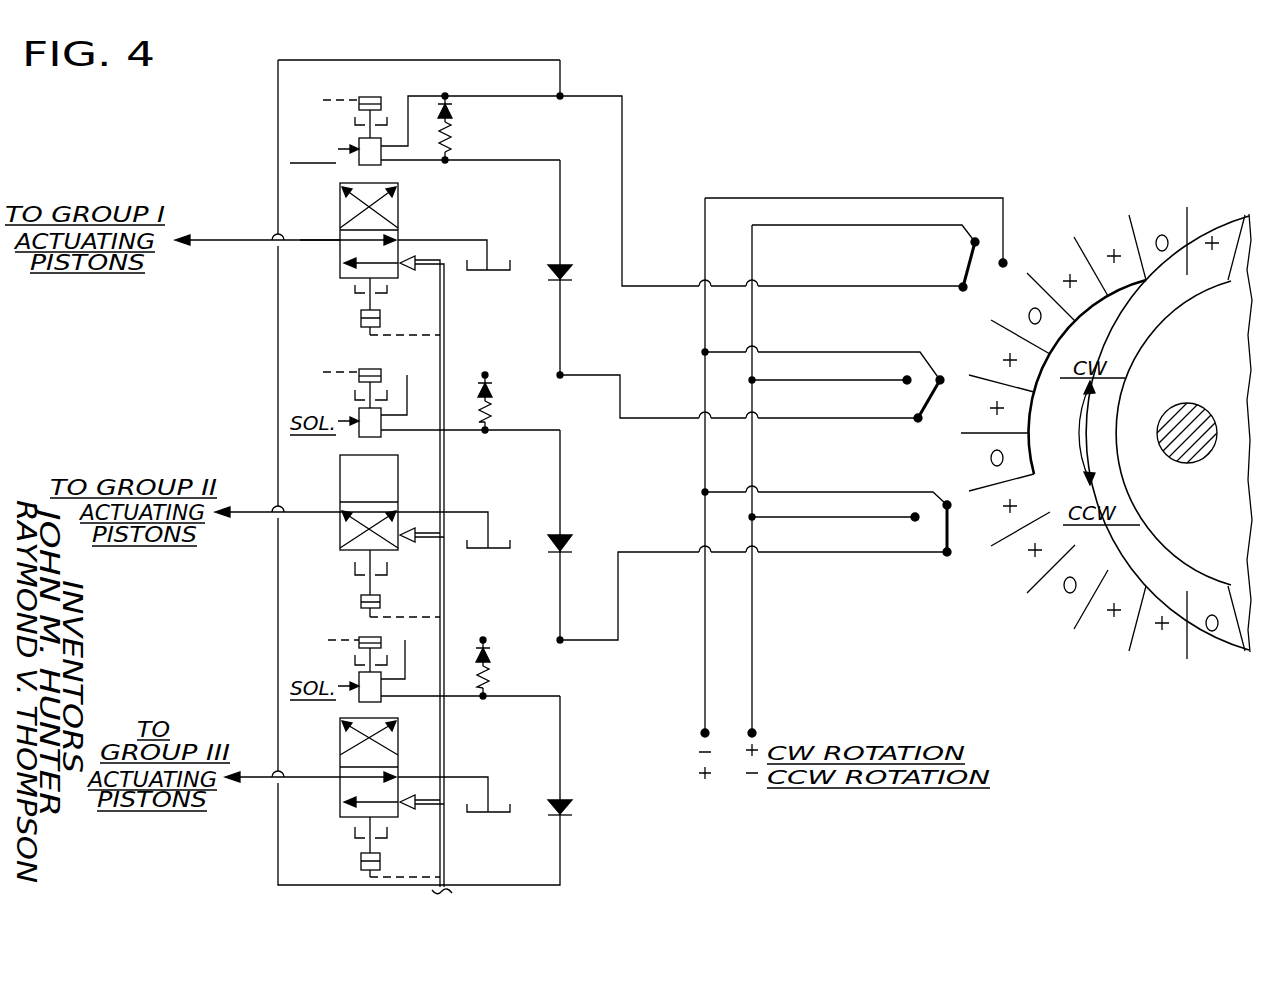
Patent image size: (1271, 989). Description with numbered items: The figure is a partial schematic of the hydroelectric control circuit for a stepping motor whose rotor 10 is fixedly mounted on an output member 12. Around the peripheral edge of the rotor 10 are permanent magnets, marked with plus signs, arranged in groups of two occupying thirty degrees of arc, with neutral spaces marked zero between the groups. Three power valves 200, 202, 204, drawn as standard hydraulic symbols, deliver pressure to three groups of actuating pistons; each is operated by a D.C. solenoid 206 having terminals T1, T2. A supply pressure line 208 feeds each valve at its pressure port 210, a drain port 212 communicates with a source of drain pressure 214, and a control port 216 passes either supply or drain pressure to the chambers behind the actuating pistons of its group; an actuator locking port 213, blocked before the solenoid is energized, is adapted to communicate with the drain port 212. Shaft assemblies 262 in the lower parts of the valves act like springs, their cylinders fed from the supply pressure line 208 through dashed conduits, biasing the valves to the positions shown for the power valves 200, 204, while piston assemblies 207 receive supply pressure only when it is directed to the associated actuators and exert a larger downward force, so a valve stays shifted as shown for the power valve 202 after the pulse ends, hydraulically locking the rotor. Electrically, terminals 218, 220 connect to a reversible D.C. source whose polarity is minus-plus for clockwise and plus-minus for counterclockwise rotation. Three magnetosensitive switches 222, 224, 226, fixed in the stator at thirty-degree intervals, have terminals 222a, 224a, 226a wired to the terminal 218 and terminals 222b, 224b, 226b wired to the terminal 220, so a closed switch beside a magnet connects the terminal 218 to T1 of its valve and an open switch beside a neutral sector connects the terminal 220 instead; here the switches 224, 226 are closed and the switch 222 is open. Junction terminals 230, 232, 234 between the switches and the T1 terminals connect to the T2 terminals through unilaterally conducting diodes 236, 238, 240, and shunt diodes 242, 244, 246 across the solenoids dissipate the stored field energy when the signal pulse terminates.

The rotor 10 is at (1192, 190).
The output member 12 is at (1187, 405).
The power valve 200 is at (430, 196).
The power valve 202 is at (412, 482).
The power valve 204 is at (414, 746).
The D.C. solenoid 206 is at (358, 160).
The piston assembly 207 is at (356, 104).
The supply pressure line 208 is at (446, 585).
The pressure port 210 is at (410, 276).
The drain port 212 is at (400, 238).
The actuator locking port 213 is at (340, 265).
The source of drain pressure 214 is at (466, 272).
The control port 216 is at (338, 238).
The terminal 218 is at (702, 733).
The terminal 220 is at (756, 730).
The magnetosensitive switch 222 is at (900, 218).
The switch terminal 222a is at (1008, 258).
The switch terminal 222b is at (968, 245).
The magnetosensitive switch 224 is at (840, 366).
The switch terminal 224a is at (942, 376).
The switch terminal 224b is at (904, 383).
The magnetosensitive switch 226 is at (826, 530).
The switch terminal 226a is at (946, 502).
The switch terminal 226b is at (913, 521).
The junction terminal 230 is at (562, 373).
The junction terminal 232 is at (561, 641).
The junction terminal 234 is at (563, 96).
The diode 236 is at (566, 267).
The diode 238 is at (570, 536).
The diode 240 is at (565, 802).
The shunt diode 242 is at (455, 127).
The shunt diode 244 is at (495, 408).
The shunt diode 246 is at (493, 668).
The shaft assembly 262 is at (358, 318).
The solenoid terminal T1 is at (382, 146).
The solenoid terminal T2 is at (382, 160).